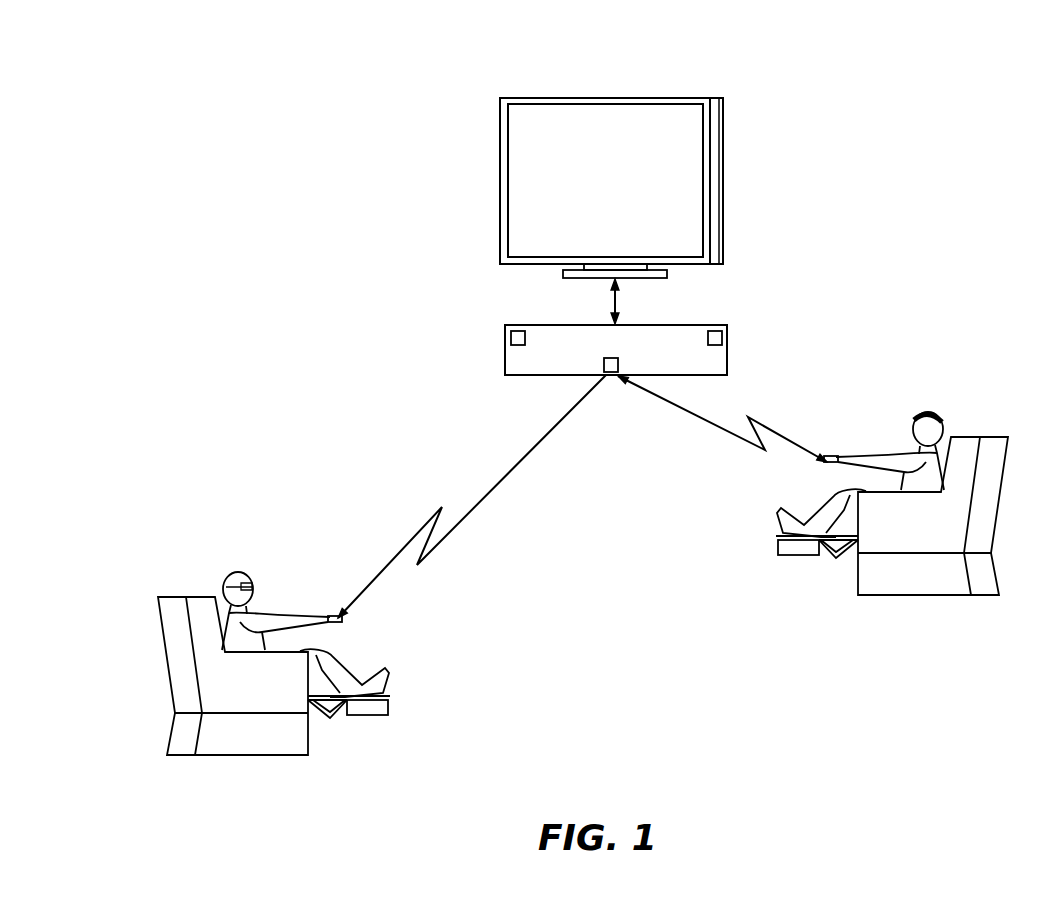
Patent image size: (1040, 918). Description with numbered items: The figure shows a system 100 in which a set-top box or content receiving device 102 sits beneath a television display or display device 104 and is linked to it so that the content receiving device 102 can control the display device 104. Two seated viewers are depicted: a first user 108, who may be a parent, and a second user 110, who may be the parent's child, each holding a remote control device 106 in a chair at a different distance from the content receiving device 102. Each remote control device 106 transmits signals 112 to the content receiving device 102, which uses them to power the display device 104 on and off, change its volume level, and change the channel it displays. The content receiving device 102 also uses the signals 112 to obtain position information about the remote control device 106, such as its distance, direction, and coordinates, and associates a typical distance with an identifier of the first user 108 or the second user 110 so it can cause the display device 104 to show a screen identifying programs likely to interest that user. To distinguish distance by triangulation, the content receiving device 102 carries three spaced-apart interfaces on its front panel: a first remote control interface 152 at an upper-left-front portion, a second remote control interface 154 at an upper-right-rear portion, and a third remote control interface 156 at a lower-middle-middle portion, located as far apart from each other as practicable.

The system 100 is at (932, 75).
The content receiving device 102 is at (730, 365).
The display device 104 is at (724, 183).
The remote control device 106 is at (345, 623).
The first user 108 is at (222, 578).
The second user 110 is at (947, 413).
The signals 112 is at (480, 503).
The first remote control interface 152 is at (511, 338).
The second remote control interface 154 is at (722, 336).
The third remote control interface 156 is at (610, 377).